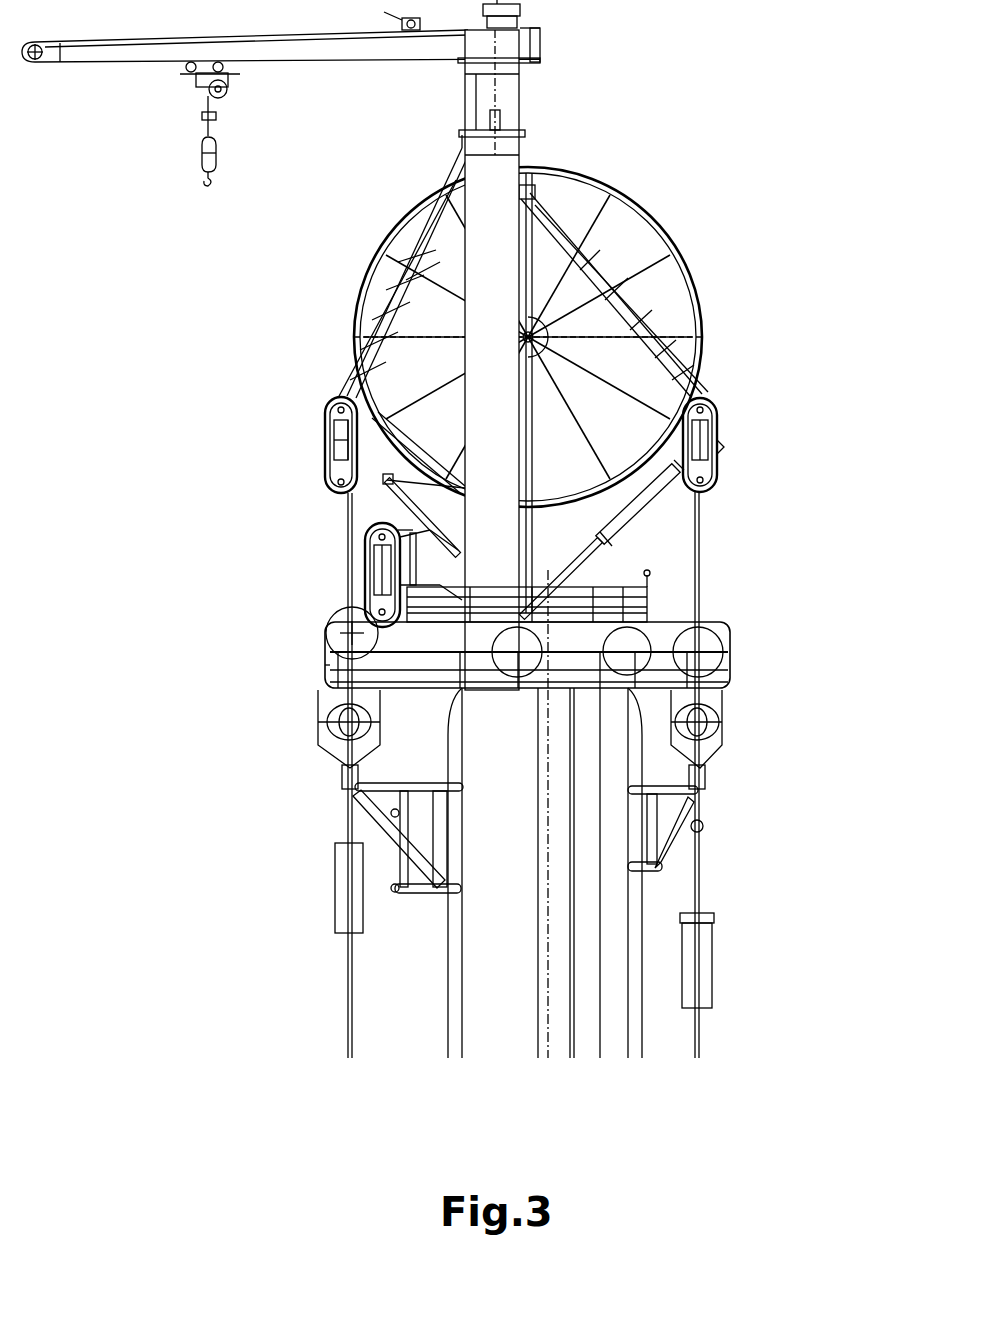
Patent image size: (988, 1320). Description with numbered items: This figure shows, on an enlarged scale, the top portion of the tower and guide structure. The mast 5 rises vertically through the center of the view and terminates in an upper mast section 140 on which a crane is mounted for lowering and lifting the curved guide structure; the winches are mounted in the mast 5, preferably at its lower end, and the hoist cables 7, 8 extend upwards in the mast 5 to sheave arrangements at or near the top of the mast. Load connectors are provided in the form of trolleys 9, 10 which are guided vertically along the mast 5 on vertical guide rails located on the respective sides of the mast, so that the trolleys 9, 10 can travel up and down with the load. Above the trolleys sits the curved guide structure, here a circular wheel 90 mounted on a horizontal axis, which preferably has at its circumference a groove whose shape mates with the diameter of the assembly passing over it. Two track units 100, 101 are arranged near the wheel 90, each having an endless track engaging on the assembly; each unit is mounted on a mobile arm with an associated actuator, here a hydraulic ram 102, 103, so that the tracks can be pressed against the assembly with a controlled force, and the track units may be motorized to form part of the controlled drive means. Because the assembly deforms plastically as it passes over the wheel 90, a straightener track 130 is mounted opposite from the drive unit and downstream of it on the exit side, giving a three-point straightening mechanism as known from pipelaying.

The mast 5 is at (333, 993).
The hoist cable 7 is at (603, 1030).
The hoist cable 8 is at (536, 990).
The load connector trolley 9 is at (655, 820).
The load connector trolley 10 is at (417, 830).
The circular wheel 90 is at (660, 205).
The track unit 100 is at (712, 450).
The track unit 101 is at (330, 447).
The hydraulic ram 102 is at (600, 548).
The hydraulic ram 103 is at (380, 506).
The straightener track 130 is at (380, 577).
The column 140 is at (505, 97).